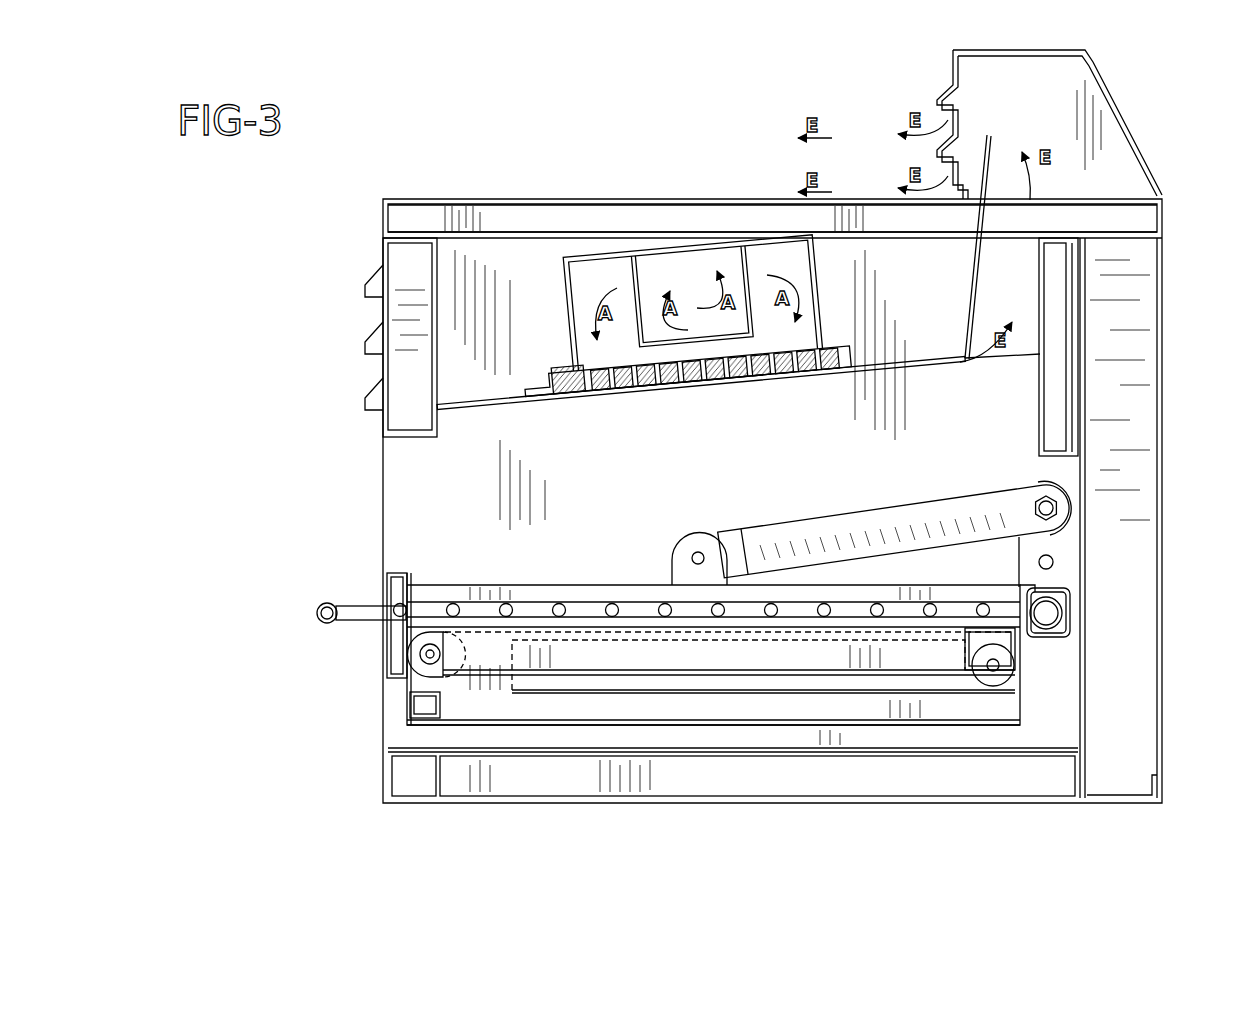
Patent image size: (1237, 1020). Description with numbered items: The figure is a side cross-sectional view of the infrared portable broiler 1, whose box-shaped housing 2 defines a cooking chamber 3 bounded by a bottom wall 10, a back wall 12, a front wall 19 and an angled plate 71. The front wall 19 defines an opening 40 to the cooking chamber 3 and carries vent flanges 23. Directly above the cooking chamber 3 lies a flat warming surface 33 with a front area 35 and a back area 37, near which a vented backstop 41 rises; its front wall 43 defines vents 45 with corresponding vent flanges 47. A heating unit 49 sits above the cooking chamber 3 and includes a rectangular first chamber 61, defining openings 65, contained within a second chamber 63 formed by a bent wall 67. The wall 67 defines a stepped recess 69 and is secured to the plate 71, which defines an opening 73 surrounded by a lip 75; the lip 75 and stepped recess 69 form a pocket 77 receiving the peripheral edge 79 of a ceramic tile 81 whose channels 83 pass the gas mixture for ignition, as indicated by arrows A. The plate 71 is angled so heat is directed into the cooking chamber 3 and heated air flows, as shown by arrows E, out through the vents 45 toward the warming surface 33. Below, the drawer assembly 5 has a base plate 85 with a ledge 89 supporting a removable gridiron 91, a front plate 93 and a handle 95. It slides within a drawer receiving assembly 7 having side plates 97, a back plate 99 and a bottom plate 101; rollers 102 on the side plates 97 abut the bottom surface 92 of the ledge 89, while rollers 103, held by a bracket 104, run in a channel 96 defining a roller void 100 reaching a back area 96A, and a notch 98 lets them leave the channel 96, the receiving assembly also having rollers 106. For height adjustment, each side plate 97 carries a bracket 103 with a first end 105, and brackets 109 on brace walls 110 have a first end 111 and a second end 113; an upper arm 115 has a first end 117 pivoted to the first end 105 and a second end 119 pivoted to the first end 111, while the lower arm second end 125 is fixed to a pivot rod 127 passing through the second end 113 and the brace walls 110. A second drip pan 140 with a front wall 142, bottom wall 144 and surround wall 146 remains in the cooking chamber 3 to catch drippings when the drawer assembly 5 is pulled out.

The infrared portable broiler 1 is at (282, 236).
The housing 2 is at (378, 214).
The cooking chamber 3 is at (440, 480).
The drawer assembly 5 is at (380, 580).
The drawer receiving assembly 7 is at (870, 584).
The bottom wall 10 is at (383, 767).
The back wall 12 is at (1066, 398).
The front wall 19 is at (380, 314).
The vent flanges 23 is at (366, 284).
The warming surface 33 is at (773, 204).
The front area 35 is at (405, 197).
The back area 37 is at (860, 197).
The opening 40 is at (410, 510).
The vented backstop 41 is at (950, 58).
The front wall 43 is at (960, 112).
The vents 45 is at (946, 90).
The vent flanges 47 is at (936, 105).
The heating unit 49 is at (560, 282).
The first chamber 61 is at (690, 270).
The second chamber 63 is at (600, 262).
The openings 65 is at (650, 282).
The wall 67 is at (826, 291).
The stepped recess 69 is at (851, 294).
The plate 71 is at (515, 400).
The opening 73 is at (645, 400).
The lip 75 is at (570, 397).
The pocket 77 is at (850, 390).
The peripheral edge 79 is at (558, 370).
The ceramic tile 81 is at (772, 388).
The channels 83 is at (745, 388).
The base plate 85 is at (828, 664).
The ledge 89 is at (555, 636).
The gridiron 91 is at (435, 598).
The bottom surface 92 is at (490, 600).
The front plate 93 is at (394, 648).
The handle 95 is at (317, 612).
The channel 96 is at (516, 702).
The back area of channel 96A is at (975, 692).
The side plates 97 is at (620, 596).
The notch 98 is at (953, 638).
The back plate 99 is at (1012, 665).
The roller void 100 is at (745, 682).
The bottom plate 101 is at (900, 726).
The rollers 102 is at (426, 655).
The bracket 103 is at (672, 558).
The bracket 104 is at (1002, 690).
The first end 105 is at (705, 532).
The rollers 106 is at (1012, 703).
The brackets 109 is at (1075, 568).
The brace walls 110 is at (513, 504).
The first end 111 is at (1062, 490).
The second end 113 is at (1026, 640).
The upper arm 115 is at (820, 510).
The first end 117 is at (745, 530).
The second end 119 is at (1020, 505).
The second end 125 is at (1052, 612).
The pivot rod 127 is at (1049, 633).
The second drip pan 140 is at (663, 690).
The front wall 142 is at (418, 702).
The bottom wall 144 is at (640, 700).
The surround wall 146 is at (455, 700).